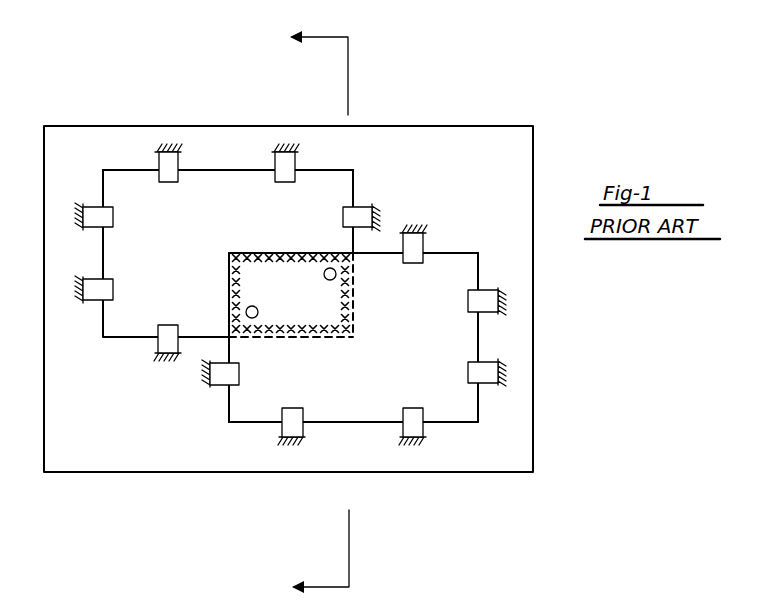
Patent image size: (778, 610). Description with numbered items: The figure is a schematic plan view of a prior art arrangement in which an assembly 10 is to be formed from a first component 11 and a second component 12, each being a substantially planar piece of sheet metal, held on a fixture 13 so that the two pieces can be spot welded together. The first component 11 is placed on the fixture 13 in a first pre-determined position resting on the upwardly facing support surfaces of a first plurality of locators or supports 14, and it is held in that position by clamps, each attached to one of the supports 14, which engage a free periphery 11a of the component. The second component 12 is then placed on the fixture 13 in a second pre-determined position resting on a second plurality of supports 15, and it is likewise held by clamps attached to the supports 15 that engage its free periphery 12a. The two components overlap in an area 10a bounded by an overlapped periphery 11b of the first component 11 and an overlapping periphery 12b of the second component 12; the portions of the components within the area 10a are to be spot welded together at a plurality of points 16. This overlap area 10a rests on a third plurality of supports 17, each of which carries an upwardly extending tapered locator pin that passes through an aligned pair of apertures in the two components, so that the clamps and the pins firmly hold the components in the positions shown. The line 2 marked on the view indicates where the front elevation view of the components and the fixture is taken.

The line 2— 2 is at (303, 315).
The assembly 10 is at (317, 299).
The area 10a is at (248, 285).
The first component 11 is at (258, 235).
The free periphery 11a is at (133, 170).
The overlapped periphery 11b is at (357, 318).
The second component 12 is at (362, 334).
The free periphery 12a is at (326, 425).
The overlapping periphery 12b is at (272, 253).
The fixture 13 is at (483, 452).
The first plurality of locators or supports 14 is at (290, 143).
The second plurality of supports 15 is at (420, 233).
The points 16 is at (297, 253).
The third plurality of supports 17 is at (238, 263).